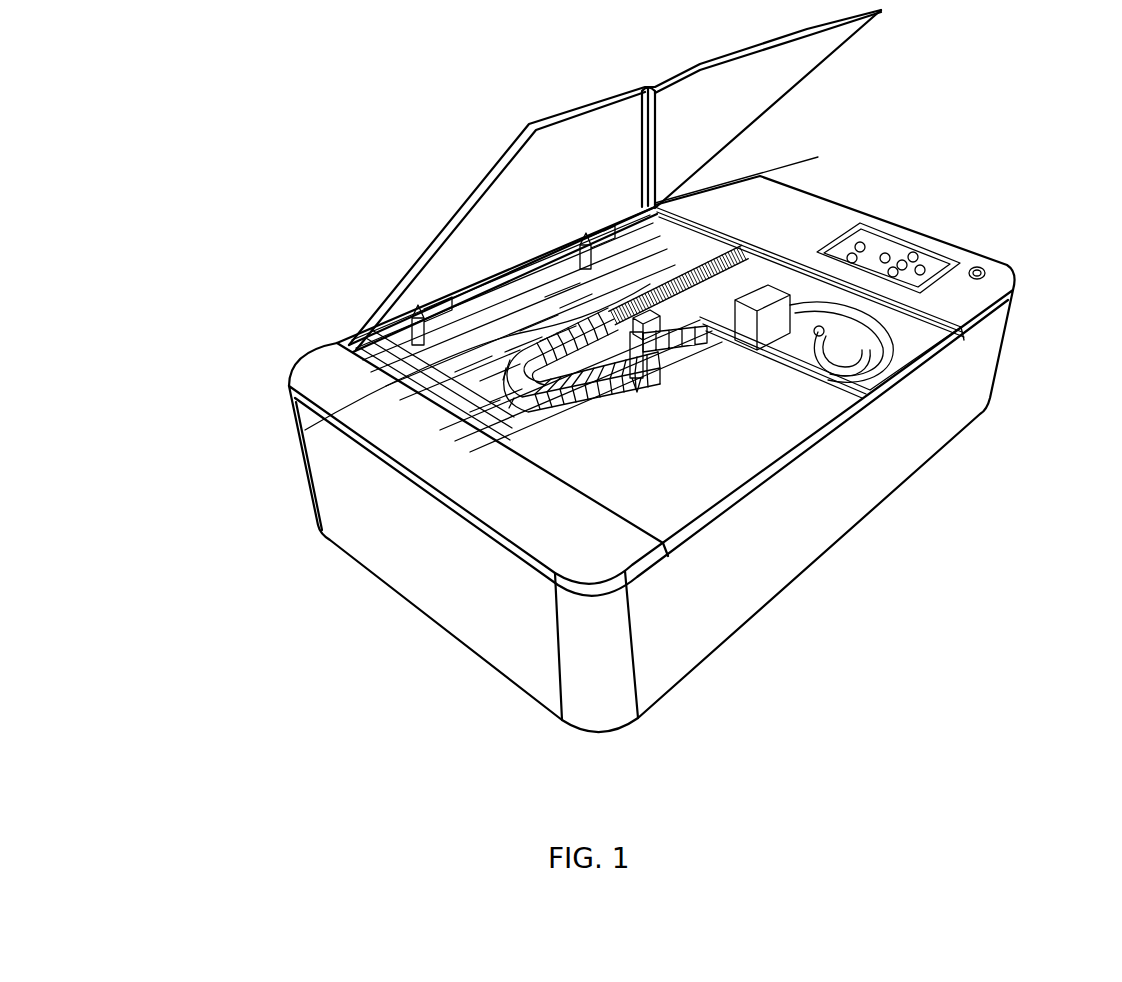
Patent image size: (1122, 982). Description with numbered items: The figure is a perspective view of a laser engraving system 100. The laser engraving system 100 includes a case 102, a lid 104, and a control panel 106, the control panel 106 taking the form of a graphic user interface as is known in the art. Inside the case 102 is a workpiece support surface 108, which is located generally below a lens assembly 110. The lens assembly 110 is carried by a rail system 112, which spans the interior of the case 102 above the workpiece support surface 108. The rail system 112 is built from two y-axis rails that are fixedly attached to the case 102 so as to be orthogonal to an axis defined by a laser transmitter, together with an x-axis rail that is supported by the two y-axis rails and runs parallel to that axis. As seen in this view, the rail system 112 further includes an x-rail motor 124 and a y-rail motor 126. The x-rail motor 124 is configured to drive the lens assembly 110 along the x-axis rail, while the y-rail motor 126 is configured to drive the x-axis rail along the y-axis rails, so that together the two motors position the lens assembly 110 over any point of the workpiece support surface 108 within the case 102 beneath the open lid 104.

The laser engraving system 100 is at (142, 200).
The case 102 is at (288, 365).
The lid 104 is at (527, 124).
The control panel 106 is at (933, 262).
The workpiece support surface 108 is at (757, 398).
The lens assembly 110 is at (638, 395).
The rail system 112 is at (727, 214).
The x-rail motor 124 is at (312, 426).
The y-rail motor 126 is at (842, 302).